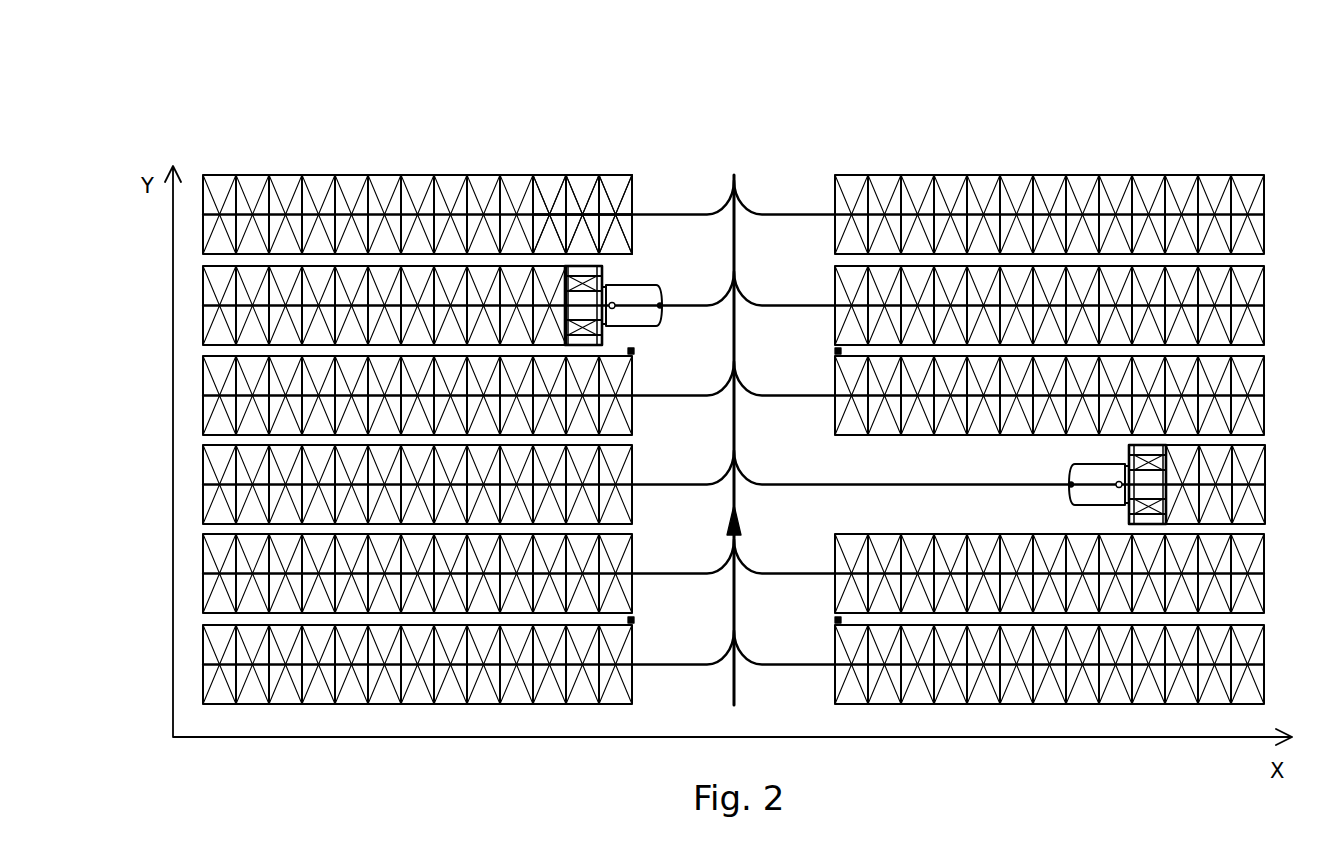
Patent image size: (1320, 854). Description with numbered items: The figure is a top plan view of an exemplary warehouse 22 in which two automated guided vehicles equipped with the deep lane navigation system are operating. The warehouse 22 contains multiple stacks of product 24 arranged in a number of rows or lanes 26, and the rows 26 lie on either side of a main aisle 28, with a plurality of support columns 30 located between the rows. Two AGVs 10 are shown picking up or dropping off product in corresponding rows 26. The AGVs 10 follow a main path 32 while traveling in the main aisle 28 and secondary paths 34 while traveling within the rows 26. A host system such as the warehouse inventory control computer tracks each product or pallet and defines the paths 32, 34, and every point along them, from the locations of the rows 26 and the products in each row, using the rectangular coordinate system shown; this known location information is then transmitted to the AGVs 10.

The warehouse 22 is at (1074, 64).
The stacks of product 24 is at (618, 175).
The rows or lanes 26 is at (636, 178).
The AGV 10 is at (640, 288).
The main path 32 is at (732, 684).
The secondary paths 34 is at (697, 212).
The support columns 30 is at (633, 350).
The main aisle 28 is at (793, 693).